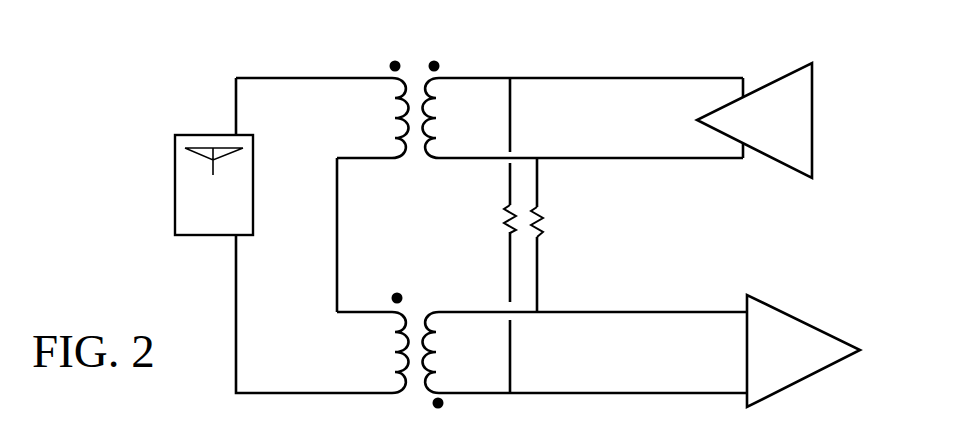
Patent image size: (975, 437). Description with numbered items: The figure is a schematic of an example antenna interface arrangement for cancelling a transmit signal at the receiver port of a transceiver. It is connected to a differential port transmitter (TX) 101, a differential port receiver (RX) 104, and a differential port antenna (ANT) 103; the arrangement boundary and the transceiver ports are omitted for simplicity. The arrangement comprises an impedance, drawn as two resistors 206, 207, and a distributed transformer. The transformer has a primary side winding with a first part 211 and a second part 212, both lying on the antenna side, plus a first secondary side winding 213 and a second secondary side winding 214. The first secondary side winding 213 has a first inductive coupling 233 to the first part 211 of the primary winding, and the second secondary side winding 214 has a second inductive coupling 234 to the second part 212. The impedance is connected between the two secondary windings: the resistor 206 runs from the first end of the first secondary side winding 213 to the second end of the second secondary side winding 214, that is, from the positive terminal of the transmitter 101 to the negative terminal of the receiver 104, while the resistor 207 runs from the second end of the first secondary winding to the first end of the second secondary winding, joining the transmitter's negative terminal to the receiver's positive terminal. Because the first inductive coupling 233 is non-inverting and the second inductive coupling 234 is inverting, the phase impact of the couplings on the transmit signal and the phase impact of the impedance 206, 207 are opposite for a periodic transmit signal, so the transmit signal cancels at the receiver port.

The differential port transmitter 101 is at (754, 120).
The differential port antenna 103 is at (216, 184).
The differential port receiver 104 is at (787, 351).
The resistor 206 is at (506, 216).
The resistor 207 is at (539, 233).
The first part of the primary side winding 211 is at (373, 118).
The second part of the primary side winding 212 is at (373, 352).
The first secondary side winding 213 is at (446, 118).
The second secondary side winding 214 is at (448, 352).
The first inductive coupling 233 is at (415, 51).
The second inductive coupling 234 is at (418, 334).